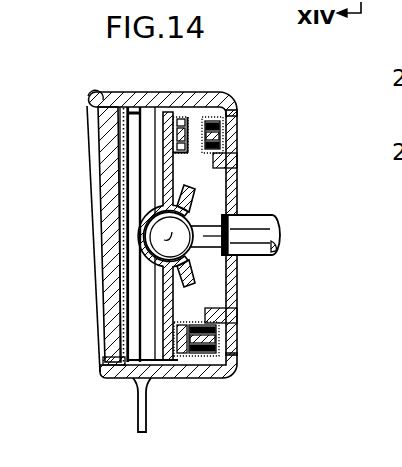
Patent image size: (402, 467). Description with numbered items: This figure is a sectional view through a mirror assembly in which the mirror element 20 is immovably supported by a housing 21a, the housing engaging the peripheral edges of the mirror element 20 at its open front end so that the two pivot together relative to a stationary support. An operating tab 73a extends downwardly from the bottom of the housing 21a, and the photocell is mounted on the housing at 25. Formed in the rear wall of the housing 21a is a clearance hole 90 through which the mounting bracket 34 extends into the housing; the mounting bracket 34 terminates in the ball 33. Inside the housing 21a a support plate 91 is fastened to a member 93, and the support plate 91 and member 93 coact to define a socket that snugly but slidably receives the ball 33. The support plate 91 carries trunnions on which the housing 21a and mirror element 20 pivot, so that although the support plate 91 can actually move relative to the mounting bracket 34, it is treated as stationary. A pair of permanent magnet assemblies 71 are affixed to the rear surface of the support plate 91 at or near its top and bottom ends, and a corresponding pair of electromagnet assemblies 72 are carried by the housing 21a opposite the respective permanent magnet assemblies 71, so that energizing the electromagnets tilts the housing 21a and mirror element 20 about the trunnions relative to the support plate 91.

The mirror element 20 is at (106, 178).
The housing 21a is at (88, 98).
The photocell mounting 25 is at (108, 367).
The ball 33 is at (146, 238).
The mounting bracket 34 is at (274, 226).
The permanent magnet assembly 71 is at (181, 117).
The electromagnet assembly 72 is at (206, 117).
The operating tab 73a is at (136, 420).
The clearance hole 90 is at (236, 200).
The support plate 91 is at (163, 305).
The member 93 is at (204, 268).